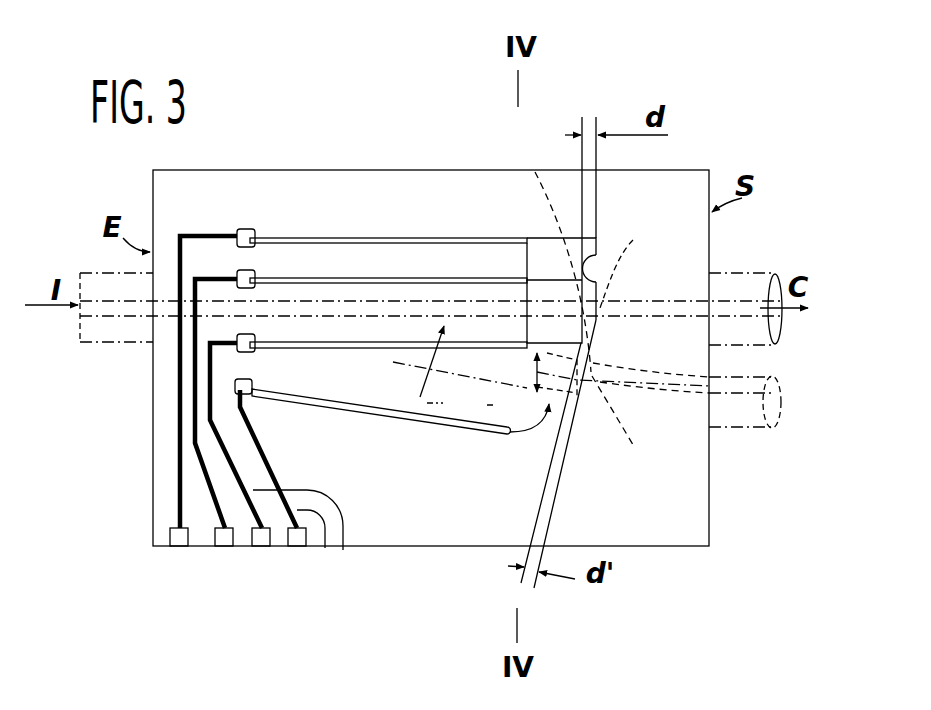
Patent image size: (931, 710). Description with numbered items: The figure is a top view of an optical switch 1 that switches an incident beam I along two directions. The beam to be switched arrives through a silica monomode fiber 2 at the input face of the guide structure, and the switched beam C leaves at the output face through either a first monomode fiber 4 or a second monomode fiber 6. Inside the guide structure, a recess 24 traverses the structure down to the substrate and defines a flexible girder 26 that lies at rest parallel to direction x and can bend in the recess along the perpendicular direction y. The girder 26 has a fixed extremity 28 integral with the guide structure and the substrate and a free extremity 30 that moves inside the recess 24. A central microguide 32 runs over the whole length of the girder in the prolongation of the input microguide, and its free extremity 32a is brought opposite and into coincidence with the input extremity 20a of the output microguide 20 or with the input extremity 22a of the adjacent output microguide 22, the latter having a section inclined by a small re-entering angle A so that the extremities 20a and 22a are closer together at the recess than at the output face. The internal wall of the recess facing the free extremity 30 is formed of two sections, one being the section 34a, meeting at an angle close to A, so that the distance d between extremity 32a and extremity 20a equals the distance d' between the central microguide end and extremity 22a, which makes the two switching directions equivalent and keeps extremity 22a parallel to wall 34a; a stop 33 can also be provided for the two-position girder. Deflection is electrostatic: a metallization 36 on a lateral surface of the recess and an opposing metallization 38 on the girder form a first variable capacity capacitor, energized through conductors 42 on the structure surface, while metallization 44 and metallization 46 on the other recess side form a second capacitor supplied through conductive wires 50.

The optical switch 1 is at (475, 470).
The monomode fiber 2 is at (112, 343).
The first monomode fiber 4 is at (768, 248).
The second monomode fiber 6 is at (733, 427).
The output microguide 20 is at (689, 300).
The input extremity of output microguide 20a is at (644, 263).
The output microguide 22 is at (650, 393).
The input extremity of output microguide 22a is at (644, 430).
The recess 24 is at (498, 369).
The flexible girder 26 is at (412, 408).
The fixed extremity of girder 28 is at (277, 323).
The free extremity of girder 30 is at (582, 330).
The central microguide 32 is at (393, 362).
The free extremity of central microguide 32a is at (537, 251).
The stop 33 is at (540, 428).
The section of recess internal wall 34a is at (597, 260).
The metallization 36 is at (353, 244).
The metallization 38 is at (405, 278).
The conductors 42 is at (210, 485).
The metallization 44 is at (302, 350).
The metallization 46 is at (407, 408).
The conductive wires 50 is at (262, 539).